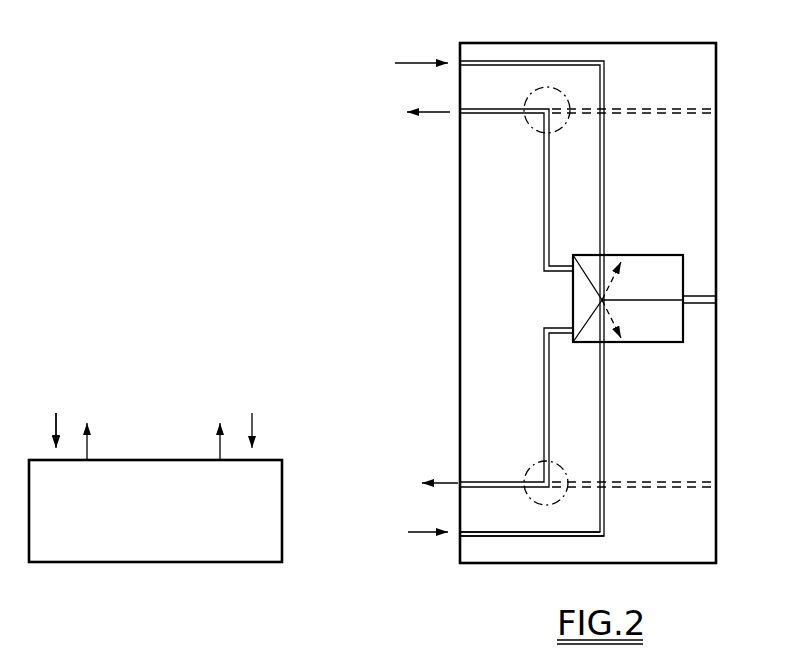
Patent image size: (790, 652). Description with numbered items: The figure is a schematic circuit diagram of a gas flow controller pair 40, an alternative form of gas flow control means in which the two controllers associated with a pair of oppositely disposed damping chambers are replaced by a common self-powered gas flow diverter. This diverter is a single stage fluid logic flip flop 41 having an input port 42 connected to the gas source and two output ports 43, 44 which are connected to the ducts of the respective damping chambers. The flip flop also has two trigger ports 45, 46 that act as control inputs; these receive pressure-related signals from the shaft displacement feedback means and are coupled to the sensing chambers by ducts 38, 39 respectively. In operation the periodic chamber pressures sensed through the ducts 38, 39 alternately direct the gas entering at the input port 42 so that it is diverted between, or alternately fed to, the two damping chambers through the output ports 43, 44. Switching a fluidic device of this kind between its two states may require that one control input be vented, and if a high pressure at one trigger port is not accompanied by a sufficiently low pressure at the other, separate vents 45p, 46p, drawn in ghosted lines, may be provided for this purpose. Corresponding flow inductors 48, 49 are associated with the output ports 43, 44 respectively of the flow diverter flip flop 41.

The duct 38 is at (400, 63).
The duct 39 is at (411, 531).
The gas flow controller pair 40 is at (718, 47).
The fluid logic flip flop 41 is at (681, 344).
The input port 42 is at (717, 300).
The output port 43 is at (458, 113).
The output port 44 is at (458, 480).
The trigger port 45 is at (458, 62).
The vent 45p is at (624, 257).
The trigger port 46 is at (458, 534).
The vent 46p is at (624, 344).
The flow inductor 48 is at (535, 129).
The flow inductor 49 is at (530, 466).